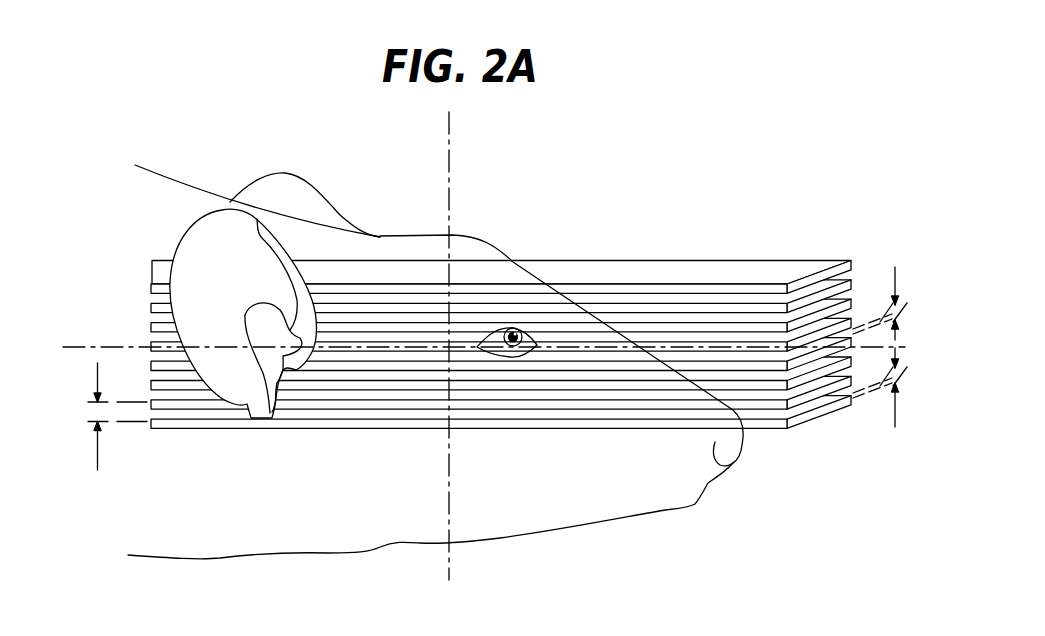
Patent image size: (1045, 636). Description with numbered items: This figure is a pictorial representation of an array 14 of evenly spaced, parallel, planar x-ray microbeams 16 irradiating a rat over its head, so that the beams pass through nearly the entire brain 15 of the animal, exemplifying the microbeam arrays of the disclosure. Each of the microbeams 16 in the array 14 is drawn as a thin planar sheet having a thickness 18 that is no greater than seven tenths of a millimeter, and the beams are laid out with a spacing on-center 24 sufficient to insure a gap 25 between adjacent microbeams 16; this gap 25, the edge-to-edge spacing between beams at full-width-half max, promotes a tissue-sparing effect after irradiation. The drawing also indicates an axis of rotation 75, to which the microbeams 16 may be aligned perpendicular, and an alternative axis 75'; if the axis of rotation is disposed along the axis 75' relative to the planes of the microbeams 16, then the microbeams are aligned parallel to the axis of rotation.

The array of x-ray microbeams 14 is at (519, 258).
The brain 15 is at (523, 493).
The microbeams 16 is at (853, 300).
The thickness 18 is at (895, 408).
The spacing on-center 24 is at (97, 458).
The gap 25 is at (896, 283).
The axis of rotation 75 is at (395, 339).
The axis 75' is at (484, 311).